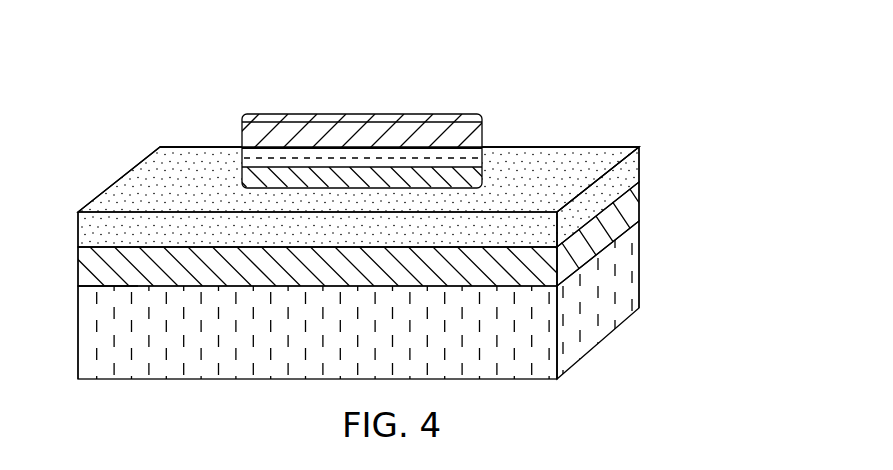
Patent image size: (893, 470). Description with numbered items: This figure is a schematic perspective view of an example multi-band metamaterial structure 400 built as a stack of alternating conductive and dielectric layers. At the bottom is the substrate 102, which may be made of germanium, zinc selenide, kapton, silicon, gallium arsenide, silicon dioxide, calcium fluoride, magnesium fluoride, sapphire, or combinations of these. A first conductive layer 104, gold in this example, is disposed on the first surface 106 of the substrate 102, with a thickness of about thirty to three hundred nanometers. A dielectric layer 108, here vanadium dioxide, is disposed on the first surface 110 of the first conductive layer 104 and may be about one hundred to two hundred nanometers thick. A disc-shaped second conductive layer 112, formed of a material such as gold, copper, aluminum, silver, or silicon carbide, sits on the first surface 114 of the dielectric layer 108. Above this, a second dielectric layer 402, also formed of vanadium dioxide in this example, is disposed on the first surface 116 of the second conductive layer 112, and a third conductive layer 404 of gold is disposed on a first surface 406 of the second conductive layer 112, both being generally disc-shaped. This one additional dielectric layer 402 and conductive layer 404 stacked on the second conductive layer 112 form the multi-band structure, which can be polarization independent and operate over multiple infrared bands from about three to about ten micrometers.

The multi-band metamaterial structure 400 is at (715, 92).
The second dielectric layer 402 is at (482, 145).
The third conductive layer 404 is at (415, 132).
The first surface of the second conductive layer 406 is at (281, 140).
The substrate 102 is at (630, 287).
The first conductive layer 104 is at (640, 222).
The first surface of the substrate 106 is at (88, 283).
The dielectric layer 108 is at (625, 168).
The first surface of the first conductive layer 110 is at (110, 245).
The second conductive layer 112 is at (503, 155).
The first surface of the dielectric layer 114 is at (115, 207).
The first surface of the second conductive layer 116 is at (248, 157).